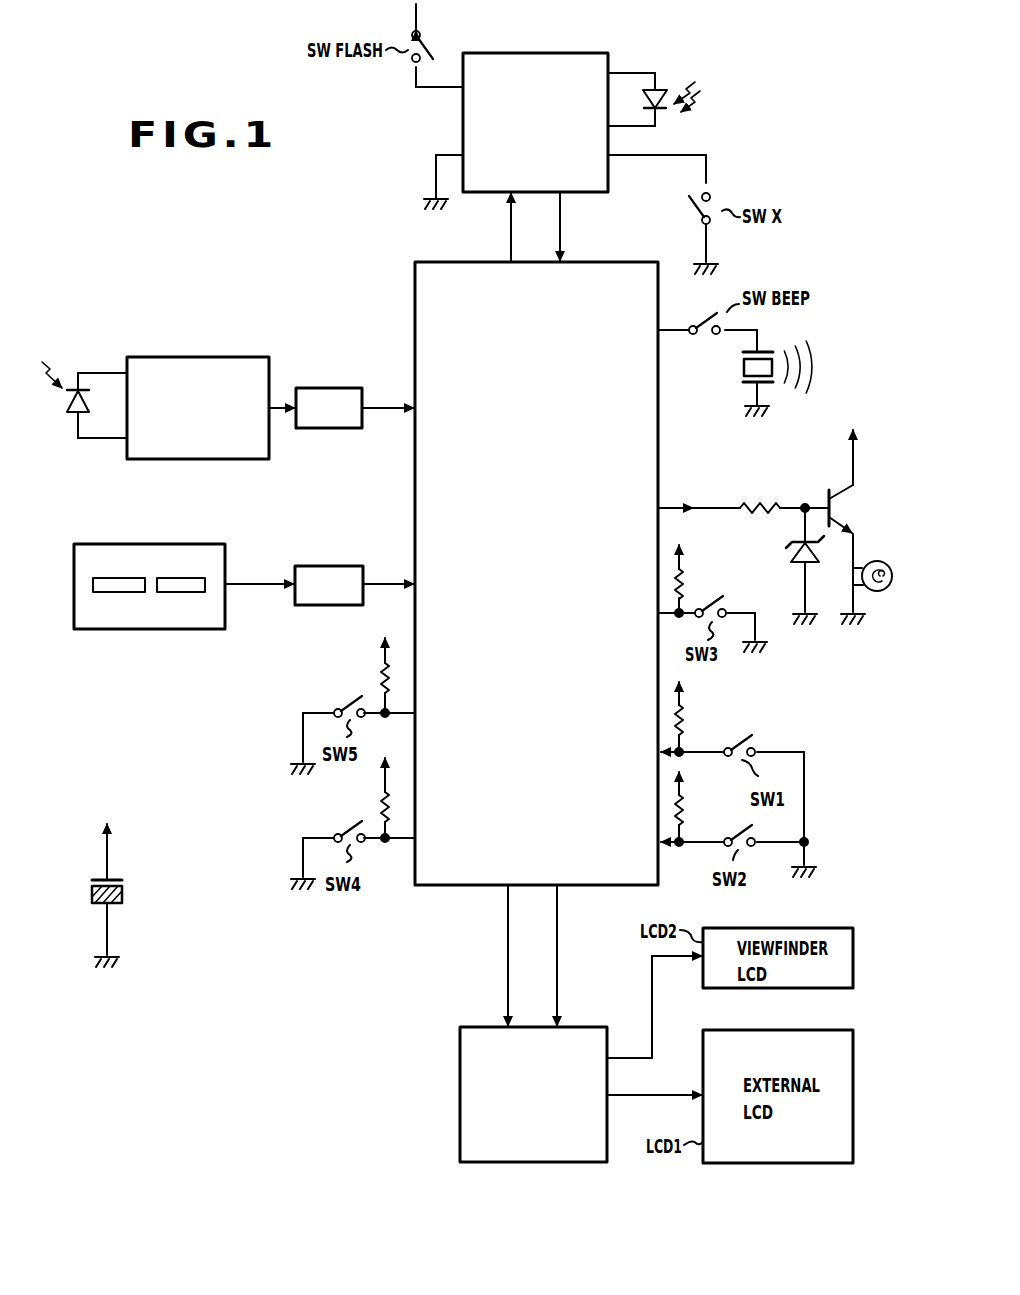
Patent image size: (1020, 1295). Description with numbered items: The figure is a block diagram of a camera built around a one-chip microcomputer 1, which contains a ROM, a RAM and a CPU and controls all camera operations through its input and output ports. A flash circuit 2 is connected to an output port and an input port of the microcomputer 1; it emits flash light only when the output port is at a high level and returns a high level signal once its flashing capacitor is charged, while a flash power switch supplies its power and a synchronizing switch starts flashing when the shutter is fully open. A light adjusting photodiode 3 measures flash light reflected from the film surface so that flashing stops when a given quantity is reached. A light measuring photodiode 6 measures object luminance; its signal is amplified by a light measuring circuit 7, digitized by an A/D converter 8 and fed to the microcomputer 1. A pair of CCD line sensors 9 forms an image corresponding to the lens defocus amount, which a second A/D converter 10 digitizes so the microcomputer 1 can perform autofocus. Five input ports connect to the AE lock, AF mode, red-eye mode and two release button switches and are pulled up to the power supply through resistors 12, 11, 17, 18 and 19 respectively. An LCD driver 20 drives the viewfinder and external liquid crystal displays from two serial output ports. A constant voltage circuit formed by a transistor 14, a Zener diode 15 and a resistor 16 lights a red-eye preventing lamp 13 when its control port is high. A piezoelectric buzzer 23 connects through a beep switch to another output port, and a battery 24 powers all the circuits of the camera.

The microcomputer 1 is at (415, 279).
The flash circuit 2 is at (583, 53).
The light adjusting photodiode 3 is at (662, 88).
The light measuring photodiode 6 is at (76, 422).
The light measuring circuit 7 is at (245, 357).
The A/D converter 8 is at (349, 388).
The CCD line sensors 9 is at (228, 554).
The A/D converter 10 is at (351, 565).
The resistor 11 is at (375, 806).
The resistor 12 is at (380, 678).
The red-eye preventing lamp 13 is at (874, 561).
The transistor 14 is at (834, 489).
The Zener diode 15 is at (793, 553).
The resistor 16 is at (748, 502).
The resistor 17 is at (686, 584).
The resistor 18 is at (685, 728).
The resistor 19 is at (685, 818).
The LCD driver 20 is at (460, 1048).
The piezoelectric buzzer 23 is at (744, 368).
The battery 24 is at (125, 893).